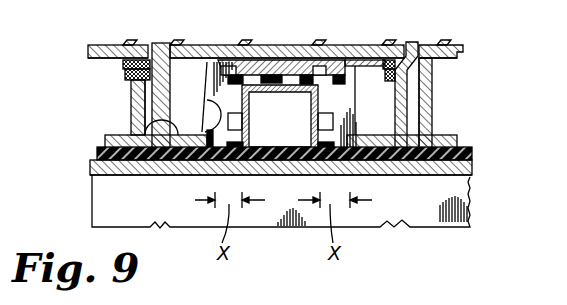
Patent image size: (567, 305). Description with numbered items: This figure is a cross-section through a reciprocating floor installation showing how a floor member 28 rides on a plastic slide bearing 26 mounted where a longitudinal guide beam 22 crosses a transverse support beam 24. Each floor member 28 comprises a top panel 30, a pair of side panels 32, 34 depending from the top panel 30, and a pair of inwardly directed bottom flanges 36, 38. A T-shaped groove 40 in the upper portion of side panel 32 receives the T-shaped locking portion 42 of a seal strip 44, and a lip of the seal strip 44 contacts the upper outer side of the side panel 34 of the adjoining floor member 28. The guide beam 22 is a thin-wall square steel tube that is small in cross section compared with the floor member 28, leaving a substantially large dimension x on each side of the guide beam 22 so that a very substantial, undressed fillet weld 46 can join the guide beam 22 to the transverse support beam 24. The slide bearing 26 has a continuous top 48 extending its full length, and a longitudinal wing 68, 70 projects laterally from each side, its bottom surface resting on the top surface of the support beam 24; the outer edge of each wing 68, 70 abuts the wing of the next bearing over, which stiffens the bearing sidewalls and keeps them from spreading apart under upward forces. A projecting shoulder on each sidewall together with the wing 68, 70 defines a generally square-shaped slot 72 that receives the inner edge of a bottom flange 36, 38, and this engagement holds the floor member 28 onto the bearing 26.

The longitudinal guide beam 22 is at (279, 162).
The transverse support beam 24 is at (407, 228).
The plastic slide bearing 26 is at (336, 96).
The floor member 28 is at (100, 44).
The top panel 30 is at (97, 58).
The side panel 32 is at (131, 106).
The side panel 34 is at (173, 90).
The bottom flange 36 is at (453, 146).
The bottom flange 38 is at (104, 136).
The T-shaped groove 40 is at (128, 76).
The T-shaped locking portion 42 is at (131, 64).
The seal strip 44 is at (152, 43).
The fillet weld 46 is at (188, 176).
The continuous top 48 is at (300, 46).
The longitudinal wing 68 is at (470, 163).
The longitudinal wing 70 is at (100, 154).
The square-shaped slot 72 is at (207, 110).